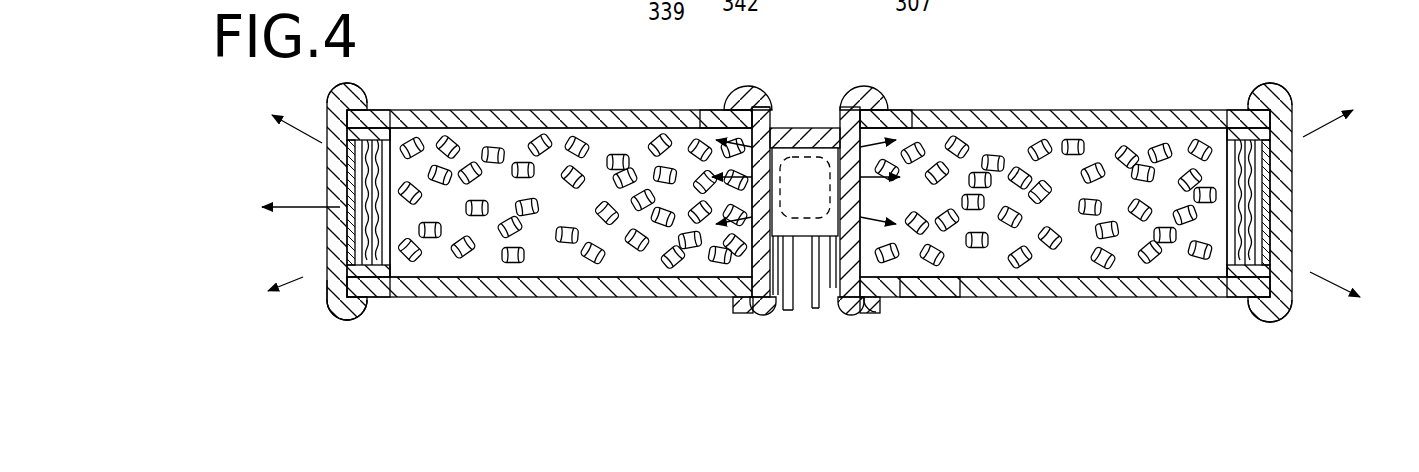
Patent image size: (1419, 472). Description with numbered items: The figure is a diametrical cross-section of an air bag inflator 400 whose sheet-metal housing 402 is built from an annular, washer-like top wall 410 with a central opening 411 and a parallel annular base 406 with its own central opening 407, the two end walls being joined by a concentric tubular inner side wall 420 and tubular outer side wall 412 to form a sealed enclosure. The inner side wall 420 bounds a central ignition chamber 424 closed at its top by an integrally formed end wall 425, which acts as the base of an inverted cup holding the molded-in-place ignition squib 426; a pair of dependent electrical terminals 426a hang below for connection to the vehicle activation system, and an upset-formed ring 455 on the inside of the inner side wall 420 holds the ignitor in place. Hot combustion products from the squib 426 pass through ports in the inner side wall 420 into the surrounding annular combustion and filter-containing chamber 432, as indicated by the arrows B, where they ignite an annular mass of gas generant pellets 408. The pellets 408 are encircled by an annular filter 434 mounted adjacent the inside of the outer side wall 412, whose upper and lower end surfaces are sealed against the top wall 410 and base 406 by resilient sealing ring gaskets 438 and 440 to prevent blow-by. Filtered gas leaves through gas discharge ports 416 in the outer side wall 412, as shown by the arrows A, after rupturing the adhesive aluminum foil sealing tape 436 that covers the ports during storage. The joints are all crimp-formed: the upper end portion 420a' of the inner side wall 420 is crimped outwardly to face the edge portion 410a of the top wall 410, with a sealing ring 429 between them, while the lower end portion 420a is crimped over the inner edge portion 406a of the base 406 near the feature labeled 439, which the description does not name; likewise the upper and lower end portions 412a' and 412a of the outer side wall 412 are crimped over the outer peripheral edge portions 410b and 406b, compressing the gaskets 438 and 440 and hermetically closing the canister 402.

The air bag inflator 400 is at (835, 380).
The housing 402 is at (336, 328).
The base 406 is at (490, 300).
The inner edge portion 406a is at (738, 298).
The outer peripheral edge portion 406b is at (376, 284).
The central opening 407 is at (932, 279).
The gas generant material 408 is at (655, 153).
The top wall 410 is at (485, 112).
The edge portion 410a is at (672, 112).
The outer peripheral edge portion 410b is at (388, 118).
The central opening 411 is at (786, 128).
The outer side wall 412 is at (340, 229).
The lower end portion of outer side wall 412a is at (823, 335).
The upper end portion of outer side wall 412a' is at (800, 69).
The gas discharge ports 416 is at (328, 205).
The inner side wall 420 is at (778, 128).
The lower end portion of inner side wall 420a is at (800, 340).
The upper end portion of inner side wall 420a' is at (819, 73).
The ignition chamber 424 is at (822, 308).
The end wall 425 is at (800, 148).
The ignition squib 426 is at (812, 150).
The electrical terminals 426a is at (792, 312).
The sealing ring 429 is at (752, 105).
The combustion and filter-containing chamber 432 is at (566, 130).
The annular filter 434 is at (332, 242).
The sealing tape 436 is at (370, 232).
The sealing ring gasket 438 is at (396, 134).
The flange 439 is at (872, 304).
The sealing ring gasket 440 is at (321, 265).
The upset-formed ring 455 is at (750, 306).
The arrows A is at (320, 146).
The arrows B is at (730, 186).